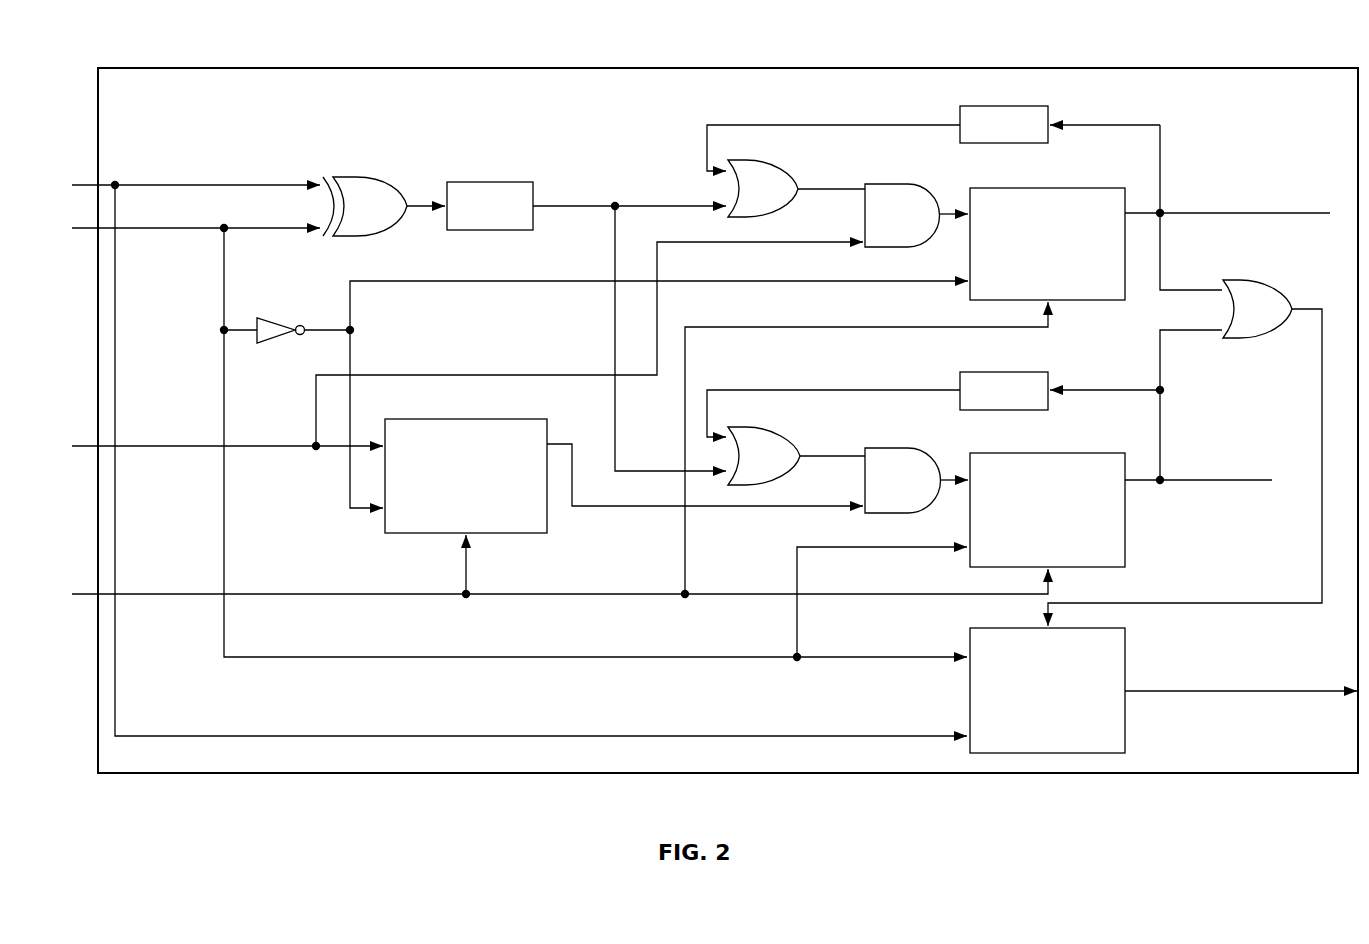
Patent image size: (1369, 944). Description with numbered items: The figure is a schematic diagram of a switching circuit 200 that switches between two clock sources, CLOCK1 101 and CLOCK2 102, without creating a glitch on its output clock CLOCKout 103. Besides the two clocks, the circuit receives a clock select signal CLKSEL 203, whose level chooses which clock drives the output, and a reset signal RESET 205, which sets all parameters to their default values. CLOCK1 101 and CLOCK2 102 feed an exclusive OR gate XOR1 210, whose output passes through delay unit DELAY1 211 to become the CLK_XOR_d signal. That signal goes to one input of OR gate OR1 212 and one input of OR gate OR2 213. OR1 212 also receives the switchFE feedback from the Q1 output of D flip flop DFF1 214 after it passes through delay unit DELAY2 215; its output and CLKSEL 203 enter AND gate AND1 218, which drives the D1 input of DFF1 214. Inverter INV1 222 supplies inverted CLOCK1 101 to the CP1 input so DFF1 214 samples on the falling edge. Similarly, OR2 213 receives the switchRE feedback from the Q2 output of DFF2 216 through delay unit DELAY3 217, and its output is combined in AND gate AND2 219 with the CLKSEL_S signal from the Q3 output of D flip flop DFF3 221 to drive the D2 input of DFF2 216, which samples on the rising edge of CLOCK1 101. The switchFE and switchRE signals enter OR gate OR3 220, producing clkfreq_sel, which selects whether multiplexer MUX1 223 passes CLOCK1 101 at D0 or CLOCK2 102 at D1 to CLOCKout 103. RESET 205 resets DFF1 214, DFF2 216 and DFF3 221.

The switching circuit 200 is at (1276, 100).
The CLOCK2 102 is at (228, 185).
The CLOCK1 101 is at (167, 231).
The exclusive OR gate XOR1 210 is at (386, 219).
The delay unit DELAY1 211 is at (533, 225).
The logical OR gate OR1 212 is at (782, 200).
The logical AND gate AND1 218 is at (918, 230).
The D Flip Flop DFF1 214 is at (1104, 188).
The delay unit DELAY2 215 is at (1048, 110).
The logical OR gate OR3 220 is at (1308, 286).
The inverter INV1 222 is at (275, 350).
The D Flip Flop DFF3 221 is at (480, 419).
The clock select signal CLKSEL 203 is at (190, 450).
The reset signal RESET 205 is at (188, 597).
The logical OR gate OR2 213 is at (782, 466).
The logical AND gate AND2 219 is at (918, 497).
The delay unit DELAY3 217 is at (1048, 378).
The D Flip Flop DFF2 216 is at (1125, 528).
The multiplexer MUX1 223 is at (1125, 722).
The CLOCKout 103 is at (1295, 690).